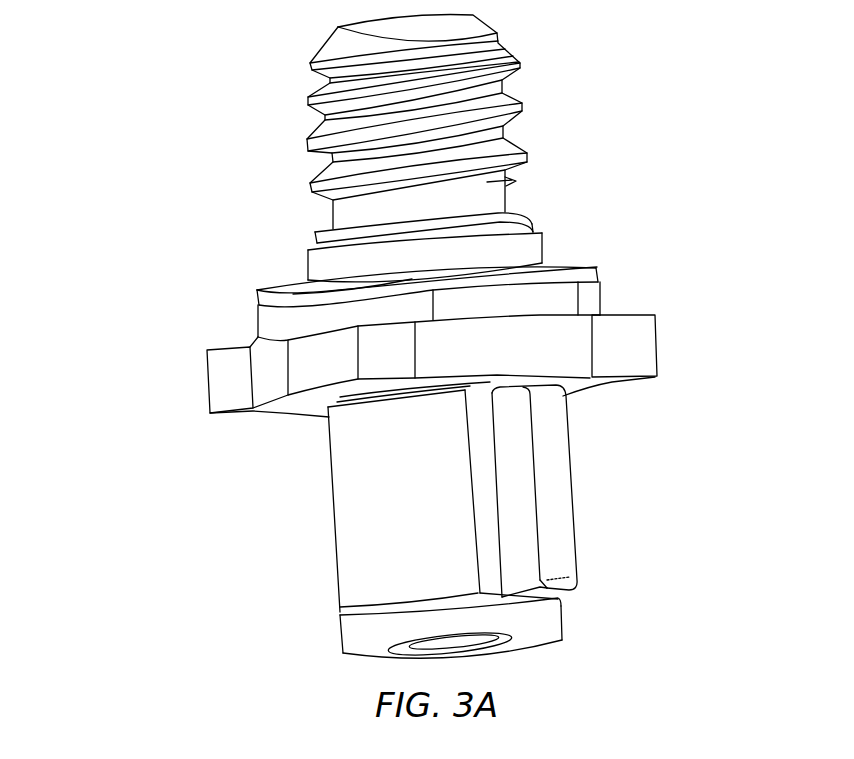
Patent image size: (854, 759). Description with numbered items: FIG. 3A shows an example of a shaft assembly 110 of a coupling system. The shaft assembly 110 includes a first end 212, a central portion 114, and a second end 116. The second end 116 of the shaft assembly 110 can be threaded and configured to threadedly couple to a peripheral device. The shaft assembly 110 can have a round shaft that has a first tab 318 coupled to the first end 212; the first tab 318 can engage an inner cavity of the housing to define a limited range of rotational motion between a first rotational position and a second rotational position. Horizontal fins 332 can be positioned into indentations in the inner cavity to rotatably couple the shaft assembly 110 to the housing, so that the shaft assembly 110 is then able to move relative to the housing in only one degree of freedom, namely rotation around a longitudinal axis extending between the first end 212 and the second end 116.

The shaft assembly 110 is at (170, 66).
The second end 116 is at (521, 61).
The central portion 114 is at (588, 305).
The horizontal fins 332 is at (640, 353).
The first end 212 is at (332, 513).
The first tab 318 is at (560, 497).